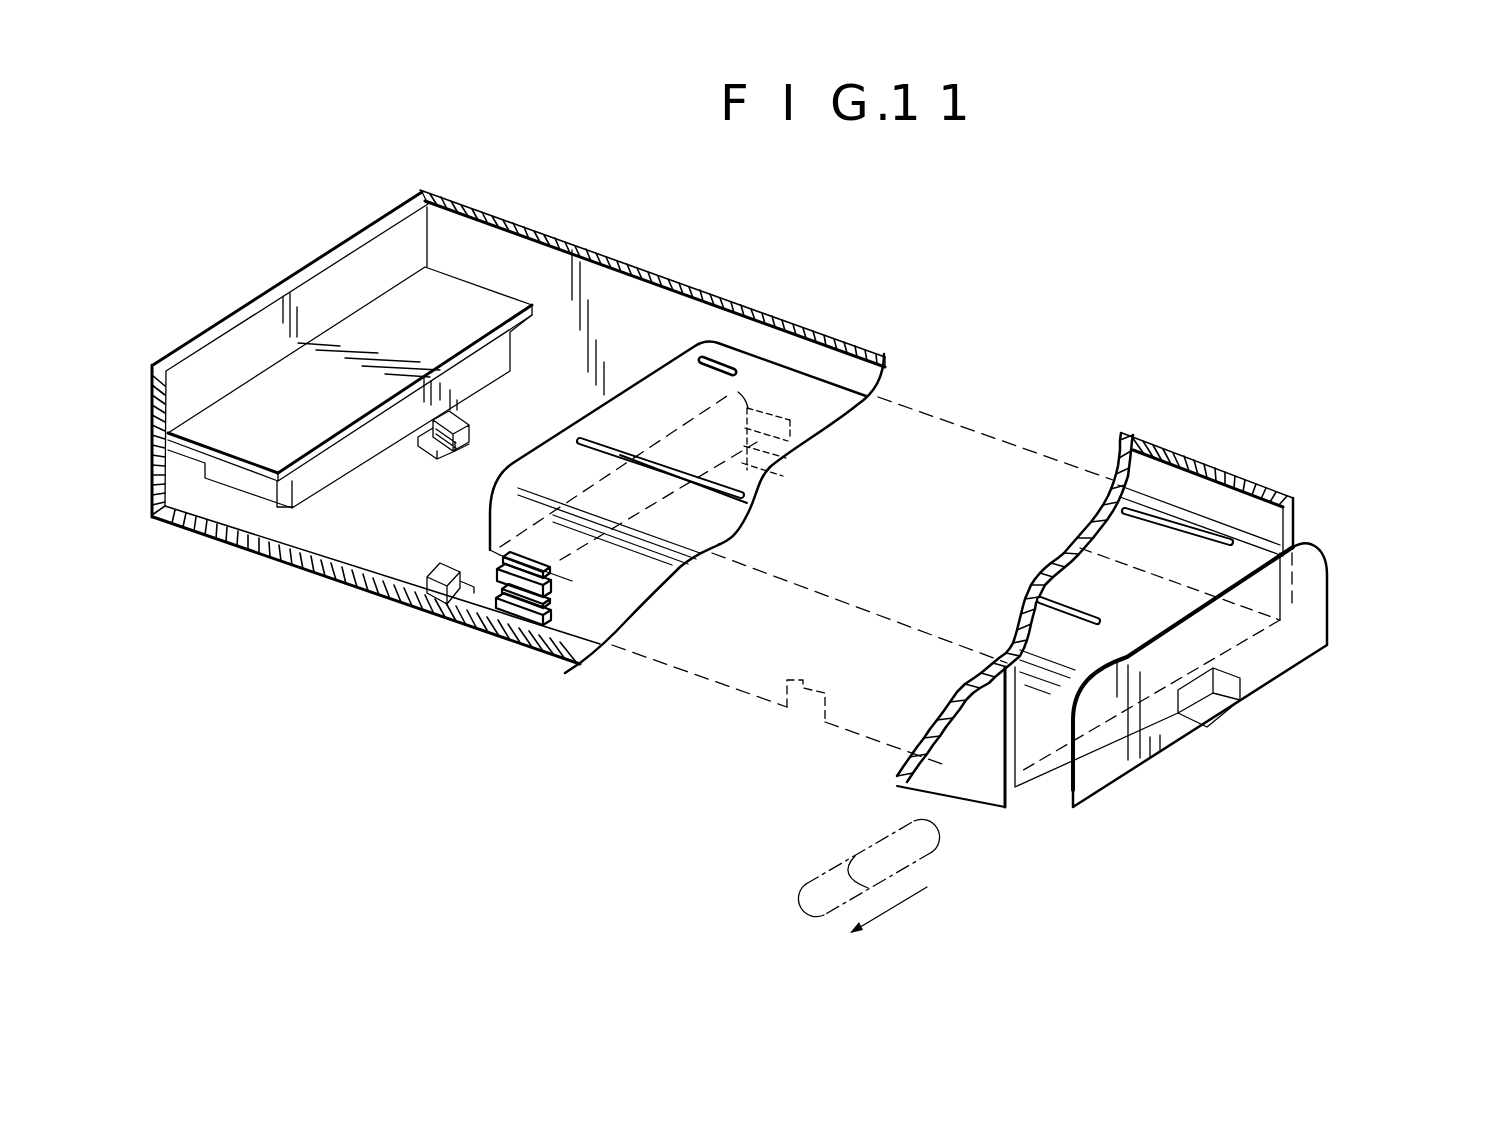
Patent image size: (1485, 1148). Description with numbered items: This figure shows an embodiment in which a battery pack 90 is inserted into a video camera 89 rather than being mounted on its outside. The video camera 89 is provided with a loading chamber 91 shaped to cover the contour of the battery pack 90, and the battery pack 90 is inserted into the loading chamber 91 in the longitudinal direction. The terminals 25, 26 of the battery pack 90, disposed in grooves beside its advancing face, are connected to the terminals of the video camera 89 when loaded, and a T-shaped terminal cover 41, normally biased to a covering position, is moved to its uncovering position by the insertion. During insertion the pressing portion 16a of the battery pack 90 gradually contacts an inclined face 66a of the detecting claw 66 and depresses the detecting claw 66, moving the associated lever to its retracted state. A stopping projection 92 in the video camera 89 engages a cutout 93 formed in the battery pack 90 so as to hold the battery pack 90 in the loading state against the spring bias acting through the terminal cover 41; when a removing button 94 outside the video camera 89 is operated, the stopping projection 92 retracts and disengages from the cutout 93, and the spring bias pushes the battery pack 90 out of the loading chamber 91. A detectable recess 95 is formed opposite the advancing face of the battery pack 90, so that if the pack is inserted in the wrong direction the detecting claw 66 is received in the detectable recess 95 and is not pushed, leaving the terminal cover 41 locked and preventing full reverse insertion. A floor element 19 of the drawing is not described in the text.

The video camera 89 is at (283, 262).
The battery pack 90 is at (1340, 594).
The loading chamber 91 is at (641, 298).
The bottom plate 19 is at (341, 535).
The terminal cover 41 is at (465, 298).
The detecting claw 66 is at (455, 418).
The inclined face 66a is at (450, 443).
The terminal 25 is at (775, 405).
The pressing portion 16a is at (677, 500).
The terminal 26 is at (522, 614).
The stopping projection 92 is at (434, 598).
The cutout 93 is at (817, 713).
The removing button 94 is at (945, 830).
The detectable recess 95 is at (1232, 702).